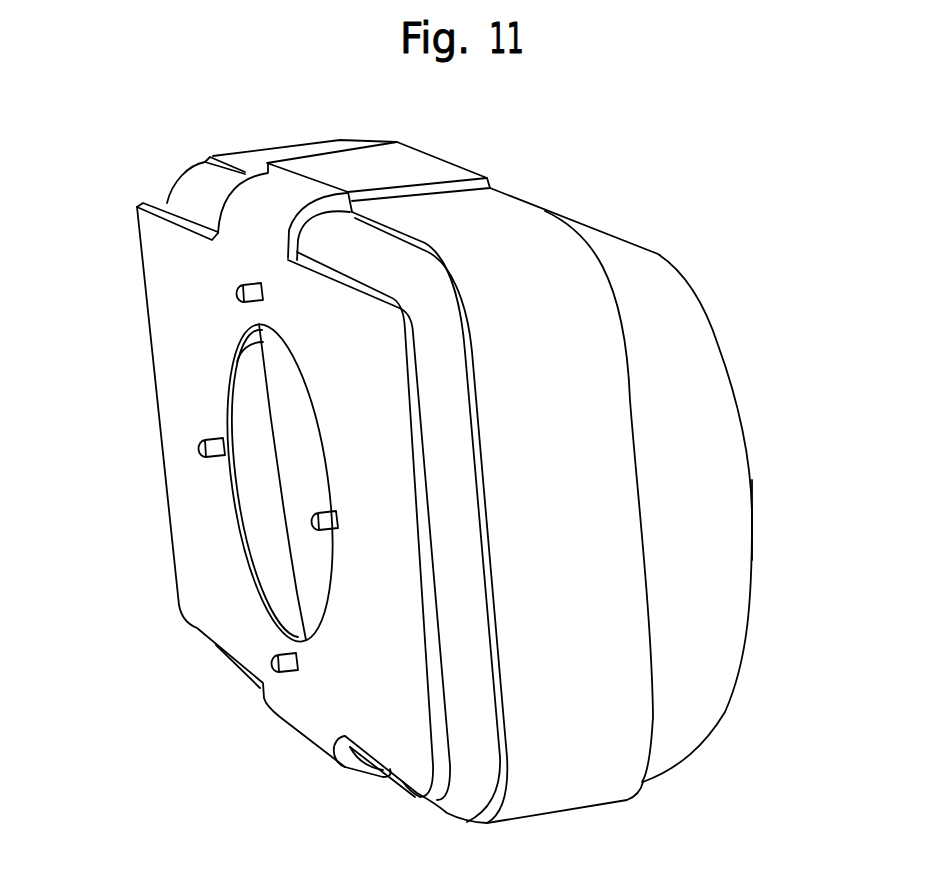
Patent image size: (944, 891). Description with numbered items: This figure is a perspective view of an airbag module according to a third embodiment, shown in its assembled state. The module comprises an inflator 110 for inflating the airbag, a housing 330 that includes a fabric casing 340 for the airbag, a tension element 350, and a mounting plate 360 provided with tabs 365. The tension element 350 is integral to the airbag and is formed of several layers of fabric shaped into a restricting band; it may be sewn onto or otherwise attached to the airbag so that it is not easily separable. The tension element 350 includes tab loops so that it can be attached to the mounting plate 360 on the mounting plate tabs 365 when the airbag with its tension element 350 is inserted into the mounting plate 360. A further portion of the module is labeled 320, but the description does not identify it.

The inflator 110 is at (293, 550).
The lower housing portion 320 is at (800, 581).
The housing 330 is at (806, 419).
The fabric casing 340 is at (752, 520).
The tension element 350 is at (530, 222).
The mounting plate 360 is at (107, 378).
The tabs 365 is at (253, 193).